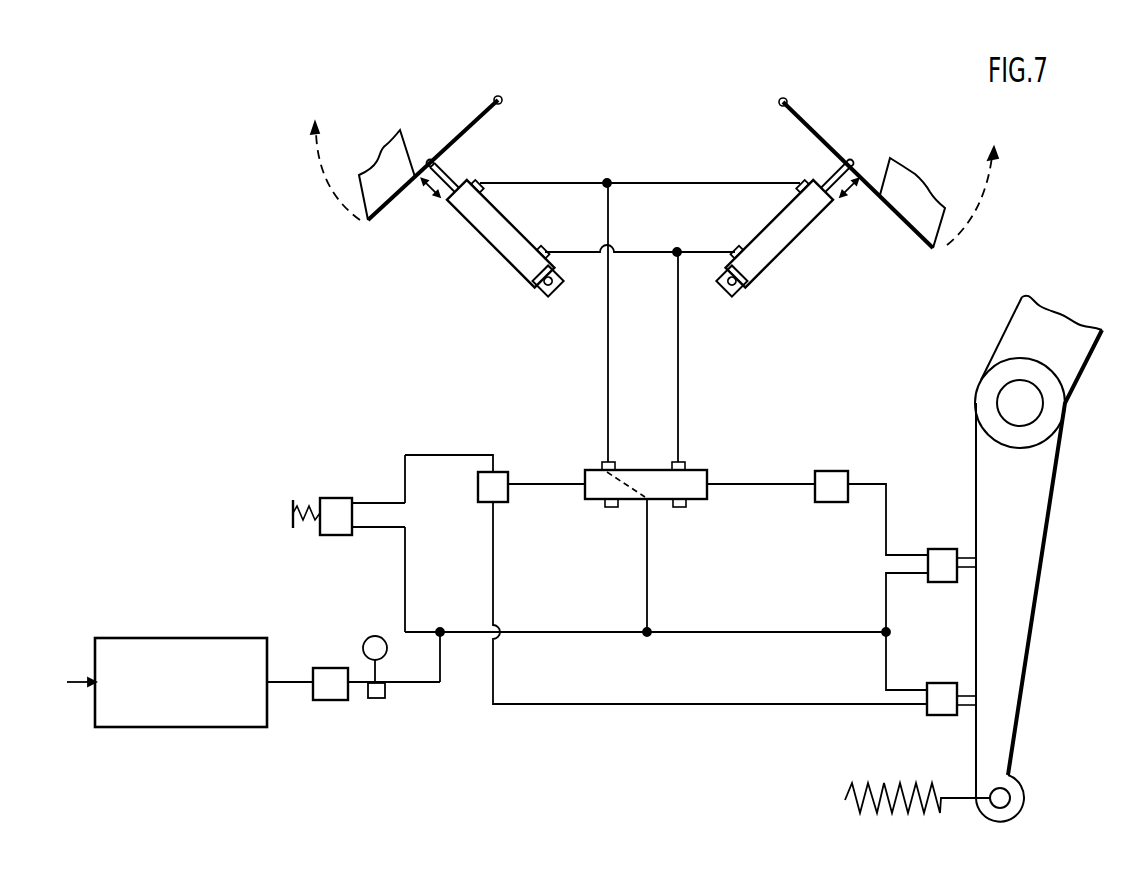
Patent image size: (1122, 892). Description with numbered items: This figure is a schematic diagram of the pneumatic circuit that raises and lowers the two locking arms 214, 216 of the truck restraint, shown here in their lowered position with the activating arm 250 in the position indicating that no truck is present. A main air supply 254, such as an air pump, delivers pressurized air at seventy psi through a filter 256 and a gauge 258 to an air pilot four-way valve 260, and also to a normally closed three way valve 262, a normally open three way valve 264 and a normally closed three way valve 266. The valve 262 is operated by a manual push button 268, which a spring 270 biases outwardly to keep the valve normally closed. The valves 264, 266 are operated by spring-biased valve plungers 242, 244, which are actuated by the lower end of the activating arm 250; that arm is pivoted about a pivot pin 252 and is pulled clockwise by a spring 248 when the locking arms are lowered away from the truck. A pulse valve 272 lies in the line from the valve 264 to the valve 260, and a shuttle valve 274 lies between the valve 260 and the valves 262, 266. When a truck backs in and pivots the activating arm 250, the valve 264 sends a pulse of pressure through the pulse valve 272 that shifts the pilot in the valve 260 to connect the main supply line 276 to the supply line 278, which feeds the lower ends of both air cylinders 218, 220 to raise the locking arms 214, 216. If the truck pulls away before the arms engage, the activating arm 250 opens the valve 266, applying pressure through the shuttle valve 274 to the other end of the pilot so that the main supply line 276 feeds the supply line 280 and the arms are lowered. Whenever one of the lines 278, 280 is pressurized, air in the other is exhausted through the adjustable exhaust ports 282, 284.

The locking arm 214 is at (480, 123).
The locking arm 216 is at (802, 127).
The air cylinder 218 is at (490, 250).
The air cylinder 220 is at (792, 248).
The valve plunger 242 is at (970, 555).
The valve plunger 244 is at (968, 715).
The spring 248 is at (873, 808).
The activating arm 250 is at (1018, 623).
The pivot pin 252 is at (1008, 402).
The main air supply 254 is at (263, 637).
The filter 256 is at (338, 668).
The gauge 258 is at (373, 698).
The air pilot four-way valve 260 is at (648, 468).
The normally closed three way valve 262 is at (350, 535).
The normally open three way valve 264 is at (937, 582).
The normally closed three way valve 266 is at (962, 662).
The manual push button 268 is at (292, 520).
The spring 270 is at (308, 508).
The pulse valve 272 is at (833, 502).
The shuttle valve 274 is at (512, 495).
The main supply line 276 is at (648, 607).
The supply line 278 is at (678, 353).
The supply line 280 is at (608, 342).
The adjustable exhaust port 282 is at (673, 510).
The adjustable exhaust port 284 is at (618, 508).